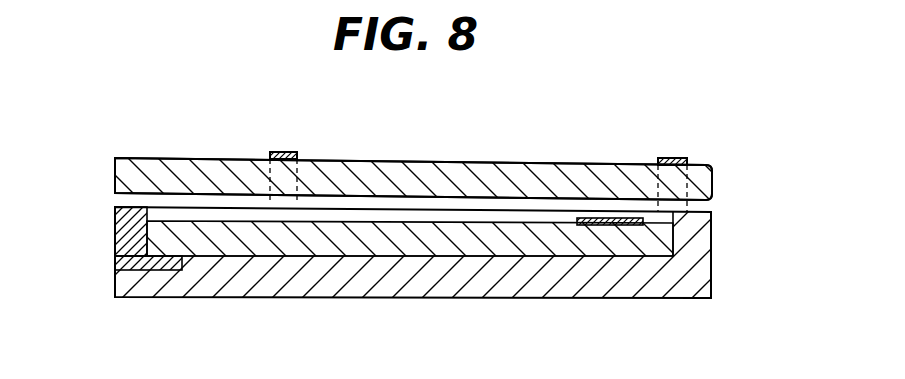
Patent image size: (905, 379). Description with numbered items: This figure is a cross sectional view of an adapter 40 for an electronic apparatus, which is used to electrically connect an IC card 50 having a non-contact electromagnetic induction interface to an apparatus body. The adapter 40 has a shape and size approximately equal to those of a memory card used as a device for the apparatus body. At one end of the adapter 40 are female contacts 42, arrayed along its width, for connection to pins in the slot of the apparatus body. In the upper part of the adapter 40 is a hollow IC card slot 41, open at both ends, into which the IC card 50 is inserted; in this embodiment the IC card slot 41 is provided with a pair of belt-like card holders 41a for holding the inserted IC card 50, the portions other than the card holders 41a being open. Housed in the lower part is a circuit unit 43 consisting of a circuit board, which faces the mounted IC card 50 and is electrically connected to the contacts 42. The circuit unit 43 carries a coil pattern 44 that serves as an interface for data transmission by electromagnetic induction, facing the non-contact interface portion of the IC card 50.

The adapter 40 is at (716, 247).
The IC card slot 41 is at (118, 194).
The card holders 41a is at (284, 152).
The female contacts 42 is at (148, 262).
The circuit unit 43 is at (550, 243).
The coil pattern 44 is at (607, 218).
The IC card 50 is at (458, 181).